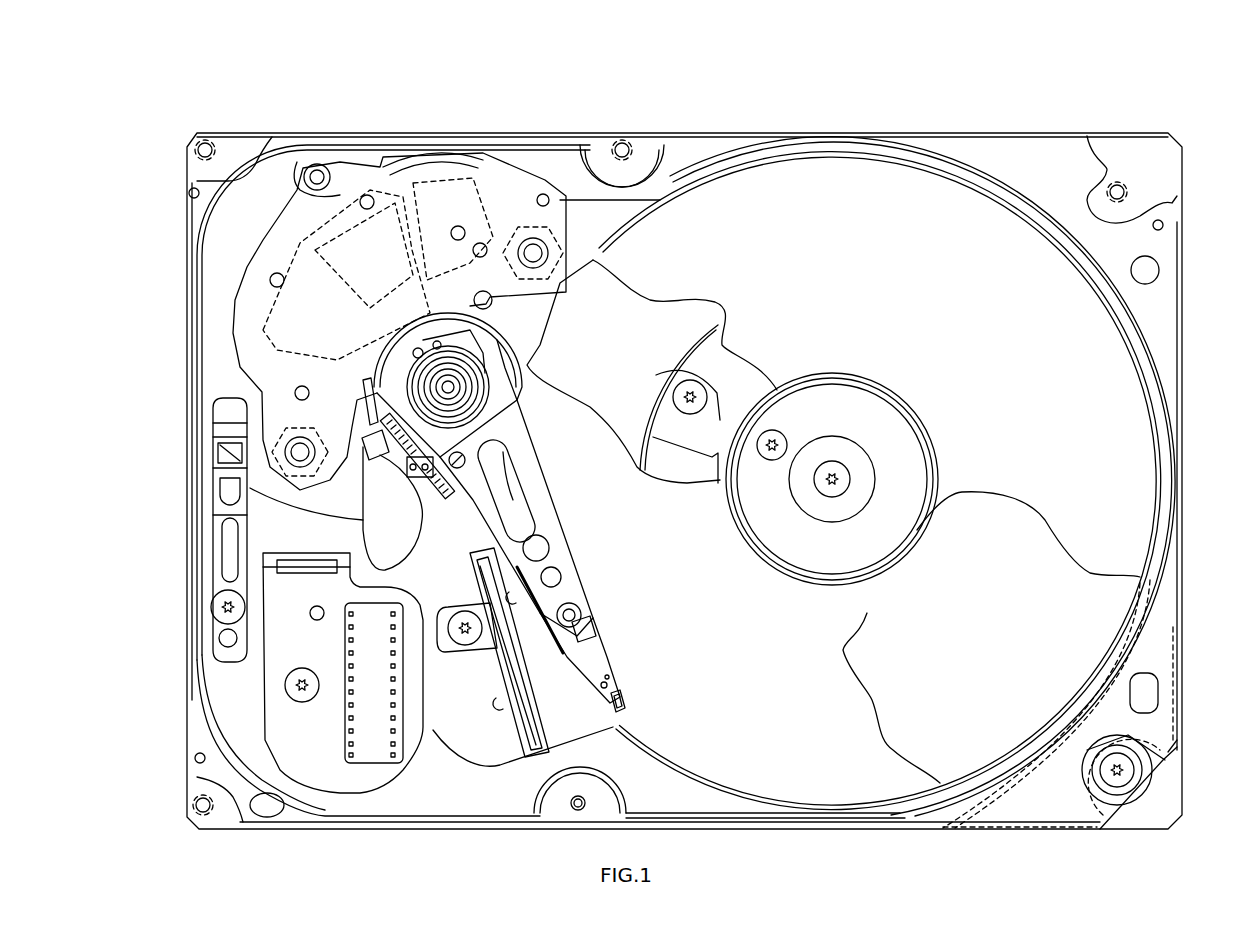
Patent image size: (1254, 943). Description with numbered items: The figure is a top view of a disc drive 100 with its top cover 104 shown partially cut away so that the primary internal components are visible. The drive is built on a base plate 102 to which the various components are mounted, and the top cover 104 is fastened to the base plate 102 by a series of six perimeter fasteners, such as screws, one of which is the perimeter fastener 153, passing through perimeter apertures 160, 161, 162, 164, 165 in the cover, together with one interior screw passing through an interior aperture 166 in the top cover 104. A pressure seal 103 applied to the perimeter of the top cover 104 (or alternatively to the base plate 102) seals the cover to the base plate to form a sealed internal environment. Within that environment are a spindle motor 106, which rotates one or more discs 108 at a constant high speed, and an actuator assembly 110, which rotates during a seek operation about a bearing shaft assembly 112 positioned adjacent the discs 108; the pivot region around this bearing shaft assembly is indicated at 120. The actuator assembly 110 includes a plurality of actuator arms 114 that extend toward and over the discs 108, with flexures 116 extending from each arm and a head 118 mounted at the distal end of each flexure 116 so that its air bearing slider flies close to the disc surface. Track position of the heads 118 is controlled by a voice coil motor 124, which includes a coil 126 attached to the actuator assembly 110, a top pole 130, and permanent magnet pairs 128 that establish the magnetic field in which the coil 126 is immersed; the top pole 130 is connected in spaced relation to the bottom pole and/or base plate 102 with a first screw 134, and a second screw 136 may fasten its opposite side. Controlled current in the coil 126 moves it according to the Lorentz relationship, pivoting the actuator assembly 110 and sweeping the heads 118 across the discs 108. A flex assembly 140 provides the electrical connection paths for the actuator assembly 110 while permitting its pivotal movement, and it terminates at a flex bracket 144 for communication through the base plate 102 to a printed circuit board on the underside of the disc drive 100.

The disc drive 100 is at (175, 117).
The base plate 102 is at (1087, 133).
The pressure seal 103 is at (750, 142).
The top cover 104 is at (1090, 642).
The spindle motor 106 is at (835, 476).
The discs 108 is at (935, 178).
The actuator assembly 110 is at (543, 527).
The bearing shaft assembly 112 is at (448, 387).
The actuator arms 114 is at (566, 586).
The flexures 116 is at (605, 657).
The head 118 is at (630, 700).
The pivot bearing housing 120 is at (502, 381).
The voice coil motor 124 is at (373, 295).
The coil 126 is at (346, 180).
The permanent magnet pairs 128 is at (444, 206).
The top pole 130 is at (512, 186).
The first screw 134 is at (300, 455).
The second screw 136 is at (545, 262).
The flex assembly 140 is at (432, 538).
The flex bracket 144 is at (260, 673).
The perimeter fastener 153 is at (1130, 775).
The perimeter aperture 160 is at (212, 143).
The perimeter aperture 161 is at (622, 142).
The perimeter aperture 162 is at (1120, 192).
The perimeter aperture 164 is at (576, 812).
The perimeter aperture 165 is at (200, 803).
The interior aperture 166 is at (452, 392).